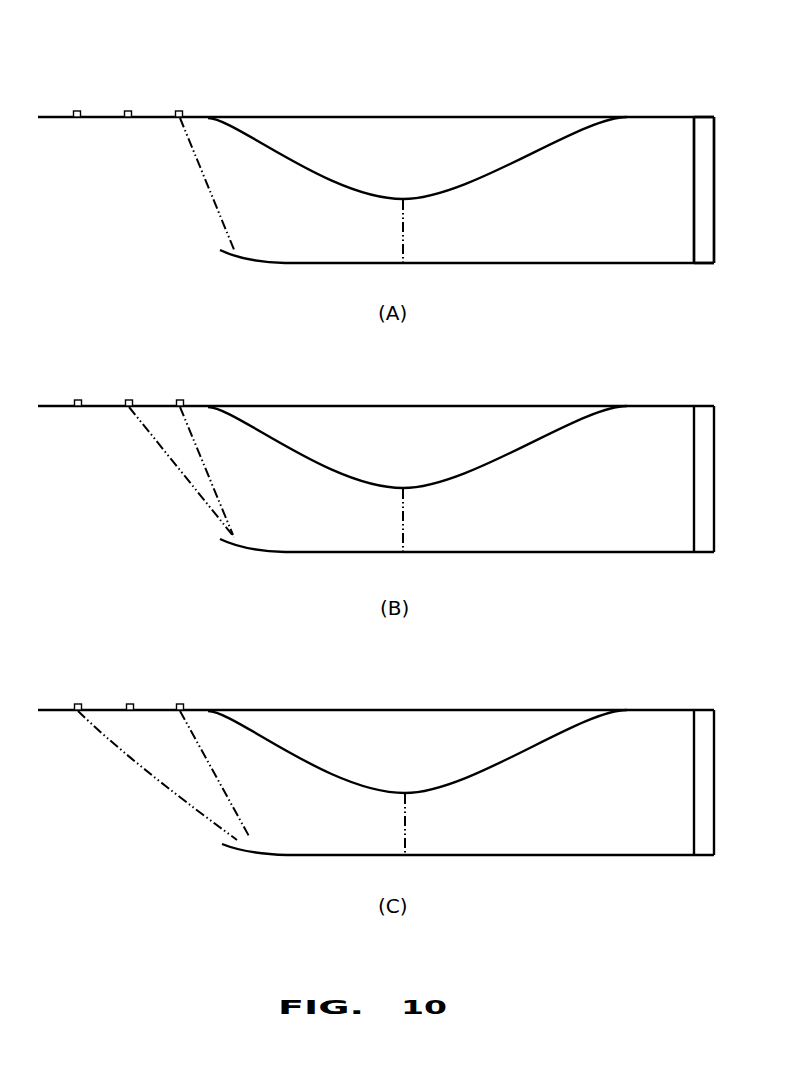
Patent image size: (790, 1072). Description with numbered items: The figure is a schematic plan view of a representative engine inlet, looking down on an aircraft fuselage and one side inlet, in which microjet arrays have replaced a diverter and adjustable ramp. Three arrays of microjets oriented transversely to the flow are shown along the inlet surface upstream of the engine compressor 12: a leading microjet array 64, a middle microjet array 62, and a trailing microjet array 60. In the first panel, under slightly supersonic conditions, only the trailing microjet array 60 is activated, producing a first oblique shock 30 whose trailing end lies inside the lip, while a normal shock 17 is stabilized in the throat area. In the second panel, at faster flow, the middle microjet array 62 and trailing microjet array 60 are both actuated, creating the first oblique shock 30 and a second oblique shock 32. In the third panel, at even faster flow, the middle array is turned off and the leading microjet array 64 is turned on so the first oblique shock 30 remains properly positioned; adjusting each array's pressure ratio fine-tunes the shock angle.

The engine compressor 12 is at (703, 116).
The normal shock 17 is at (403, 250).
The first oblique shock 30 is at (210, 198).
The second oblique shock 32 is at (222, 505).
The trailing microjet array 60 is at (179, 111).
The middle microjet array 62 is at (128, 111).
The leading microjet array 64 is at (78, 111).